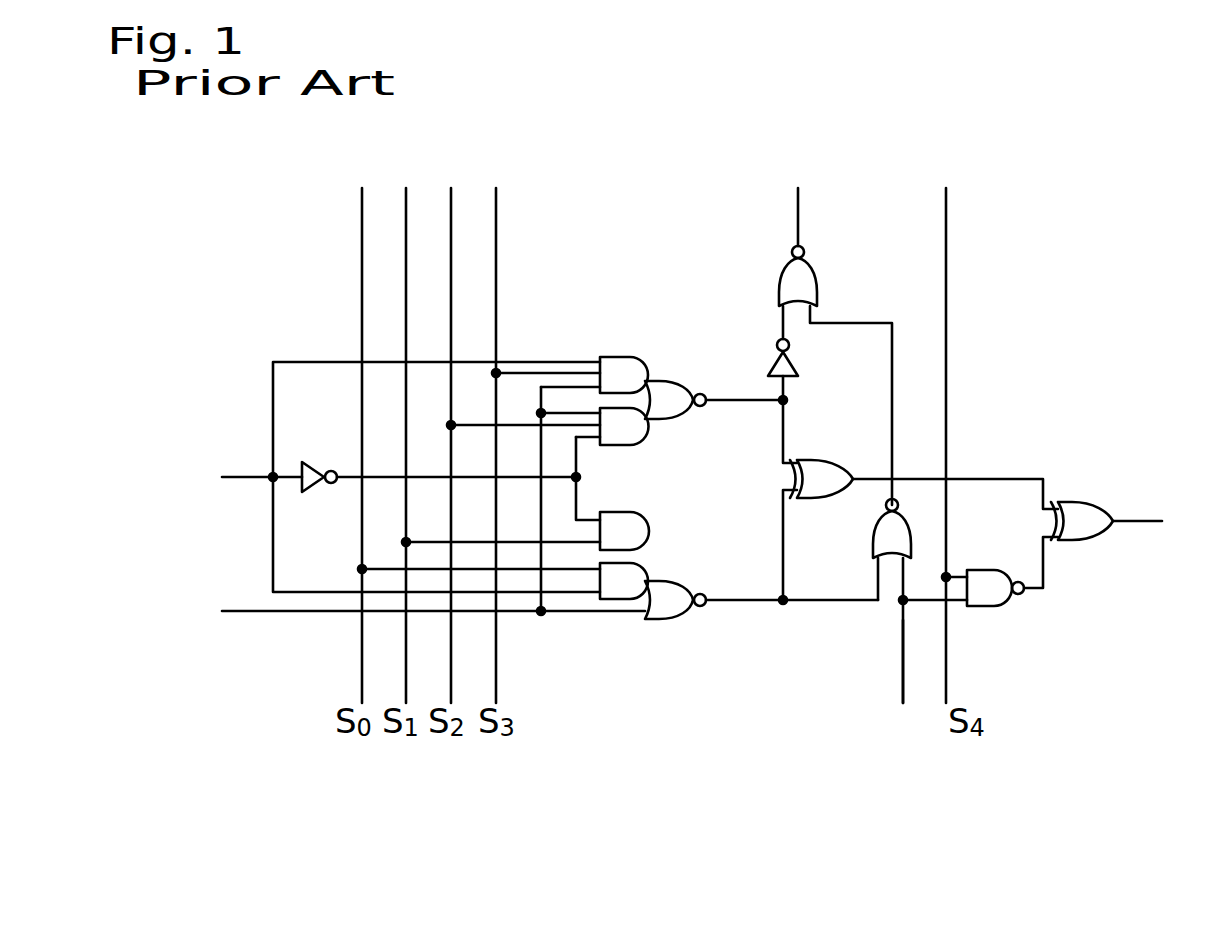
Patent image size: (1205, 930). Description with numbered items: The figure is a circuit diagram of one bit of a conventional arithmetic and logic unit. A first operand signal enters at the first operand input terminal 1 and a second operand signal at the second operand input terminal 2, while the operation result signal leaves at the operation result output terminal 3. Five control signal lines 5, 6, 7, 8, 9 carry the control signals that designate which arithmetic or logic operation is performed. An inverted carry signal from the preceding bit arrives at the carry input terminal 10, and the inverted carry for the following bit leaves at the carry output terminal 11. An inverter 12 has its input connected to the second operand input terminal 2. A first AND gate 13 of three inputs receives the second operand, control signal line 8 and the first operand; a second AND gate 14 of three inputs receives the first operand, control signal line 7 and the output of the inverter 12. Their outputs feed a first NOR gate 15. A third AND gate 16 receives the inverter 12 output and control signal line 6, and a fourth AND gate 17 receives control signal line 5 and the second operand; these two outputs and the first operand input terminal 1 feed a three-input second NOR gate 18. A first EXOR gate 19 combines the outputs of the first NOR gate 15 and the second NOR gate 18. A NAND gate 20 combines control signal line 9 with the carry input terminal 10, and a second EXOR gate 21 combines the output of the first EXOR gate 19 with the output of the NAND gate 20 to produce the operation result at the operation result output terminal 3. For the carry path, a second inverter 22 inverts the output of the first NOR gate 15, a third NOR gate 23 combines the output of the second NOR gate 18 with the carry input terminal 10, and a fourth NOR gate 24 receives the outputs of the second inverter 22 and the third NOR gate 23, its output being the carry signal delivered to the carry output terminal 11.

The first operand input terminal 1 is at (248, 612).
The second operand input terminal 2 is at (252, 477).
The operation result output terminal 3 is at (1132, 523).
The control signal line 5 is at (362, 244).
The control signal line 6 is at (406, 244).
The control signal line 7 is at (451, 244).
The control signal line 8 is at (496, 244).
The control signal line 9 is at (946, 215).
The carry input terminal 10 is at (903, 651).
The carry output terminal 11 is at (798, 218).
The inverter 12 is at (312, 490).
The first AND gate 13 is at (620, 357).
The second AND gate 14 is at (615, 446).
The first NOR gate 15 is at (672, 382).
The third AND gate 16 is at (616, 512).
The fourth AND gate 17 is at (648, 576).
The second NOR gate 18 is at (668, 619).
The first exclusive OR gate 19 is at (829, 461).
The NAND gate 20 is at (985, 607).
The second EXOR gate 21 is at (1078, 502).
The second inverter 22 is at (798, 362).
The third NOR gate 23 is at (873, 546).
The fourth NOR gate 24 is at (818, 290).